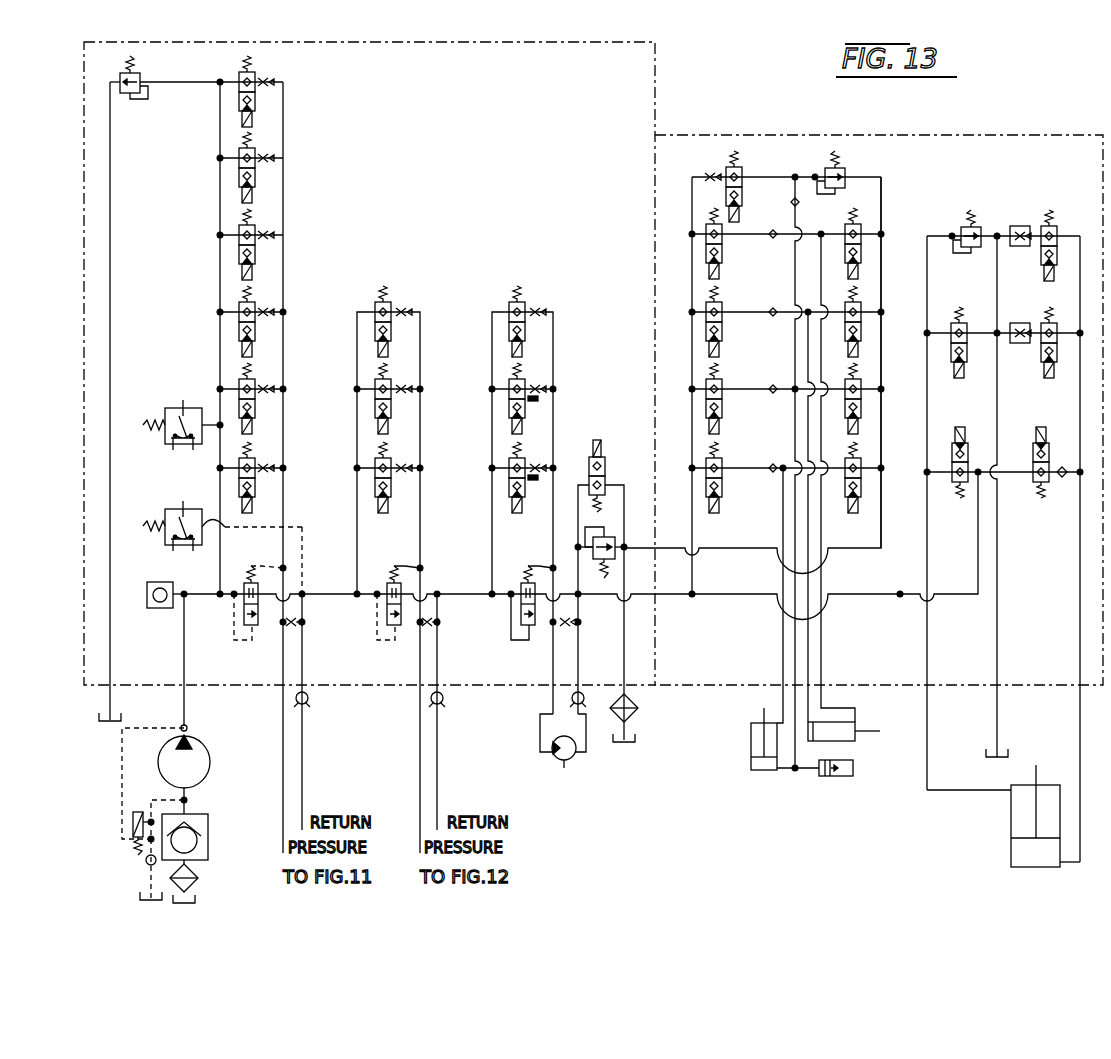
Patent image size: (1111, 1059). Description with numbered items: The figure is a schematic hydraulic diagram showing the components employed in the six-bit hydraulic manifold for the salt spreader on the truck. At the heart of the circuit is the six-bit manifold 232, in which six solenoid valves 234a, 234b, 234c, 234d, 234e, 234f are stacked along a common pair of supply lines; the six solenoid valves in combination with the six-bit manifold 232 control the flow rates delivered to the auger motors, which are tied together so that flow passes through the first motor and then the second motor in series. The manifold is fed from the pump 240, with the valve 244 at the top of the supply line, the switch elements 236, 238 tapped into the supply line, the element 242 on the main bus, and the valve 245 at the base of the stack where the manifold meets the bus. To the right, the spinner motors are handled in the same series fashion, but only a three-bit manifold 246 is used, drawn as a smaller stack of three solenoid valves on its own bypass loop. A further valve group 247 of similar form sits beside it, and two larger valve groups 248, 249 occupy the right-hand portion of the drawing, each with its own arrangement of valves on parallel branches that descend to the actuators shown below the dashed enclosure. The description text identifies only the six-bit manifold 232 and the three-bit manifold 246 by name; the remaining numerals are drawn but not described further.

The 6-bit manifold 232 is at (312, 325).
The solenoid valve 234a is at (257, 95).
The solenoid valve 234b is at (257, 171).
The solenoid valve 234c is at (257, 248).
The solenoid valve 234d is at (257, 327).
The solenoid valve 234e is at (257, 405).
The solenoid valve 234f is at (257, 483).
The pressure switch 236 is at (183, 509).
The pressure switch 238 is at (183, 408).
The pump 240 is at (205, 752).
The pressure sensor 242 is at (168, 610).
The relief valve 244 is at (146, 70).
The proportional valve 245 is at (260, 626).
The 3-bit manifold 246 is at (404, 290).
The valve group 247 is at (540, 290).
The valve group 248 is at (883, 172).
The valve group 249 is at (1003, 212).